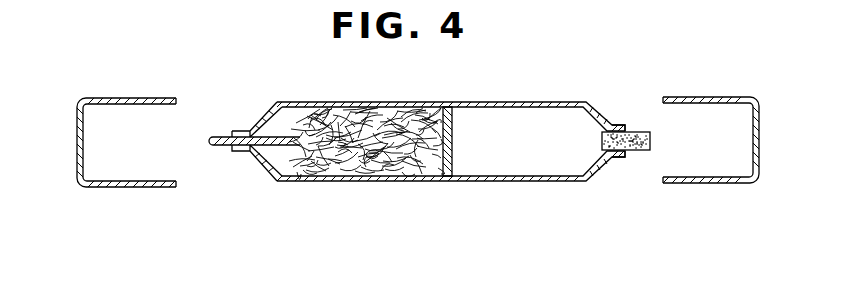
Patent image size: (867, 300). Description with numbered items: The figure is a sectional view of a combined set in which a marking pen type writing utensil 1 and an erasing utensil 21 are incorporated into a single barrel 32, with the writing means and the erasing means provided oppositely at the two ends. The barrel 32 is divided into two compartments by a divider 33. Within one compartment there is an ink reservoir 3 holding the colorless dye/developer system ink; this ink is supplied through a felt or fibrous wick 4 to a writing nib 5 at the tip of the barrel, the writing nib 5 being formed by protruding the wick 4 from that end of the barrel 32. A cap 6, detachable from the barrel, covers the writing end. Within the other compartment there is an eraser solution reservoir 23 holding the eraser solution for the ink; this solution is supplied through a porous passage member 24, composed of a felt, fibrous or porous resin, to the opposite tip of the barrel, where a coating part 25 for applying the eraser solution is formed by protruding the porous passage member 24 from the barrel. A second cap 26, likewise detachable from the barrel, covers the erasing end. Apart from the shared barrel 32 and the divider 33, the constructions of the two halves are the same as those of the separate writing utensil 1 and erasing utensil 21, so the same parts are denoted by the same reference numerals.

The writing utensil 1 is at (372, 97).
The ink reservoir 3 is at (367, 176).
The wick 4 is at (274, 142).
The writing nib 5 is at (212, 146).
The cap 6 is at (130, 98).
The erasing utensil 21 is at (522, 97).
The eraser solution reservoir 23 is at (523, 165).
The porous passage member 24 is at (612, 153).
The coating part 25 is at (638, 131).
The cap 26 is at (707, 97).
The barrel 32 is at (438, 104).
The divider 33 is at (456, 178).